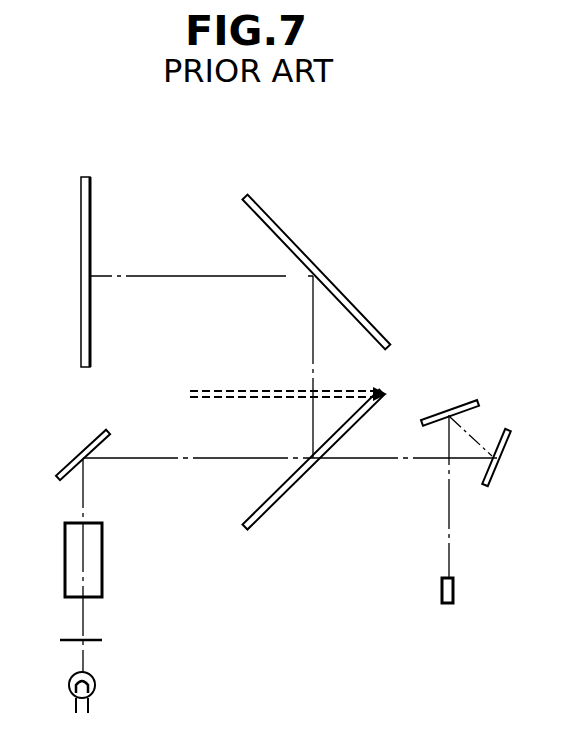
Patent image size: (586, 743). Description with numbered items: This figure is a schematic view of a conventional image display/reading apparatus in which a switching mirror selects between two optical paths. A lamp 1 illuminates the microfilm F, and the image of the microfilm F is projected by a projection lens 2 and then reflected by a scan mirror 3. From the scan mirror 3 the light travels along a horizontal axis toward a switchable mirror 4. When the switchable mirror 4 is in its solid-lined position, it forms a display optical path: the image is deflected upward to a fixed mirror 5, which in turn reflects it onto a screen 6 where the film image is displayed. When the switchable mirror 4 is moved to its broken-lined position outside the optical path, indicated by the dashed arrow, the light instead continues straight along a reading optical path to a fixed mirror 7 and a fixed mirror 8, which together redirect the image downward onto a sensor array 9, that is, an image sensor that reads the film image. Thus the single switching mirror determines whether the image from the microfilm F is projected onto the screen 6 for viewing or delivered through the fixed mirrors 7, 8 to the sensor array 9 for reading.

The lamp 1 is at (97, 687).
The projection lens 2 is at (103, 546).
The scan mirror 3 is at (78, 460).
The switchable mirror 4 is at (278, 497).
The fixed mirror 5 is at (361, 313).
The screen 6 is at (91, 177).
The fixed mirror 7 is at (512, 440).
The fixed mirror 8 is at (460, 402).
The sensor array 9 is at (454, 583).
The microfilm F is at (100, 640).